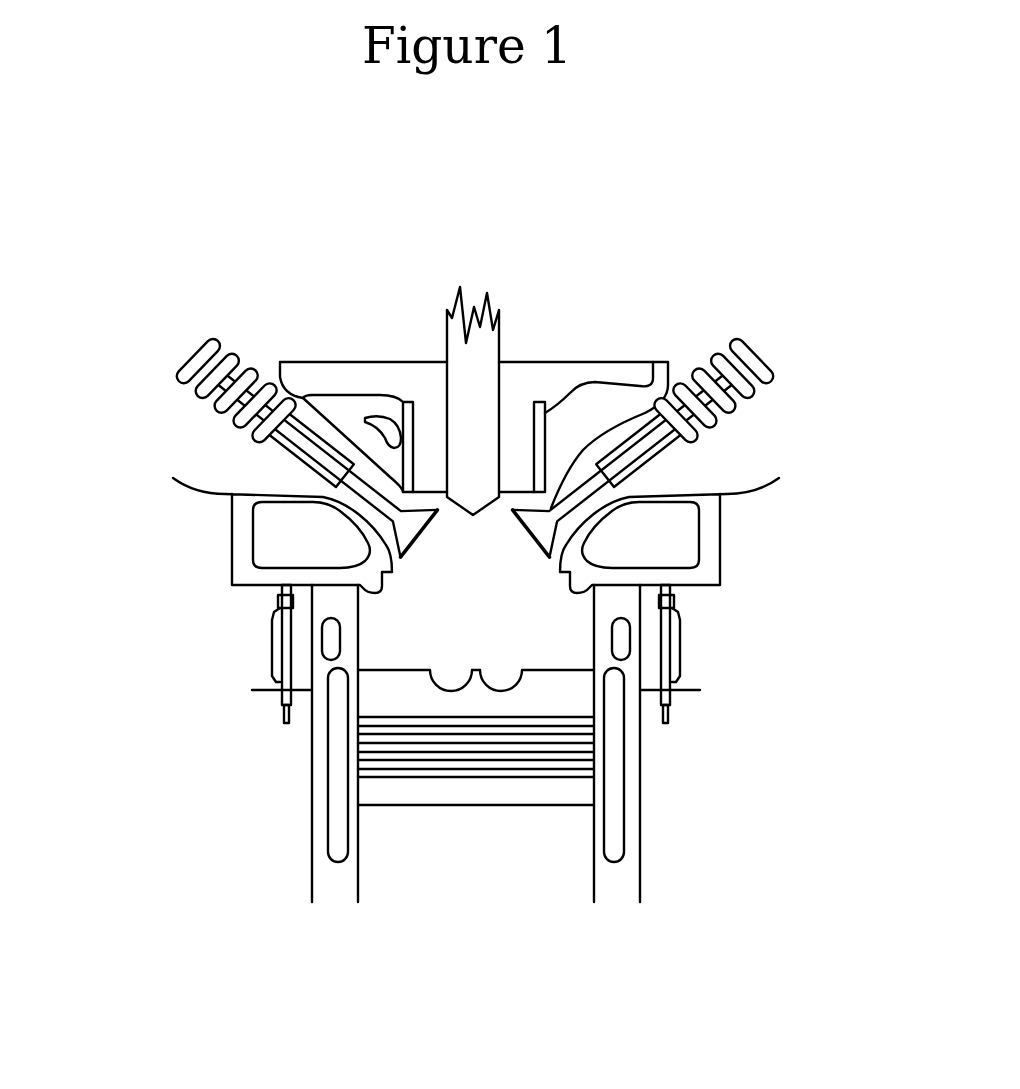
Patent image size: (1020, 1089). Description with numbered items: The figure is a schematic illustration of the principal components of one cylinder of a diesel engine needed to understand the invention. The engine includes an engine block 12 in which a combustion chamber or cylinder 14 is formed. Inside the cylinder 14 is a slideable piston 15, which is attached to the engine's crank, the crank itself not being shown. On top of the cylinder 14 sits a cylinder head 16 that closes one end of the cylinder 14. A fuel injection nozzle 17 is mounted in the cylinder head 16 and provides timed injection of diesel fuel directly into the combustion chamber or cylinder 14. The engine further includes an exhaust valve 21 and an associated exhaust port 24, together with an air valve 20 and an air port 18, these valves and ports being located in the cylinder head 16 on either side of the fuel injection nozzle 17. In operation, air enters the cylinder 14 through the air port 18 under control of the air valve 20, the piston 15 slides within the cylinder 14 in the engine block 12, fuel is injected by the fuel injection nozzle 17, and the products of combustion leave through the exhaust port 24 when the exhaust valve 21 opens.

The engine block 12 is at (310, 795).
The cylinder 14 is at (360, 855).
The piston 15 is at (507, 807).
The cylinder head 16 is at (617, 360).
The fuel injection nozzle 17 is at (447, 340).
The air port 18 is at (208, 445).
The air valve 20 is at (280, 452).
The exhaust valve 21 is at (663, 450).
The exhaust port 24 is at (740, 462).